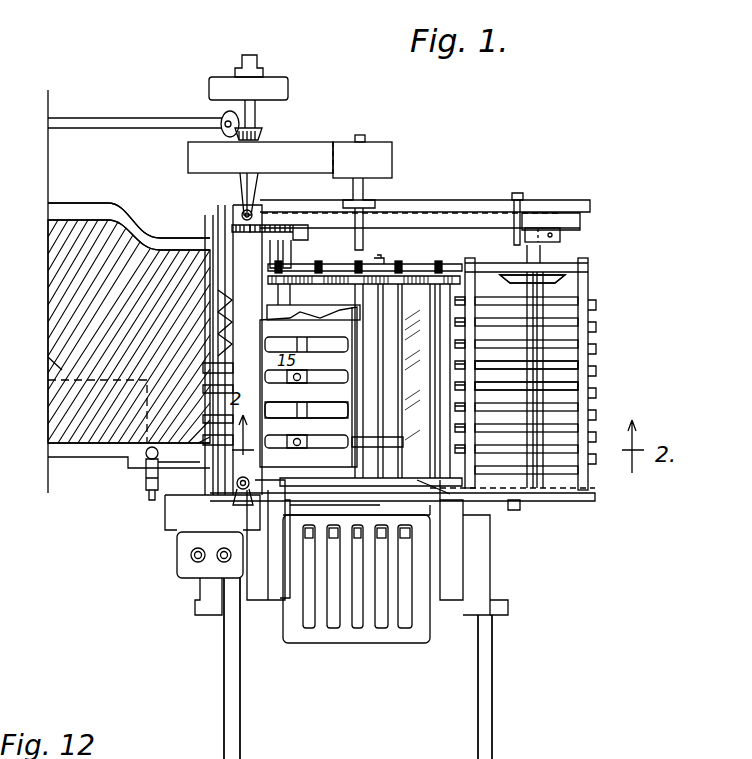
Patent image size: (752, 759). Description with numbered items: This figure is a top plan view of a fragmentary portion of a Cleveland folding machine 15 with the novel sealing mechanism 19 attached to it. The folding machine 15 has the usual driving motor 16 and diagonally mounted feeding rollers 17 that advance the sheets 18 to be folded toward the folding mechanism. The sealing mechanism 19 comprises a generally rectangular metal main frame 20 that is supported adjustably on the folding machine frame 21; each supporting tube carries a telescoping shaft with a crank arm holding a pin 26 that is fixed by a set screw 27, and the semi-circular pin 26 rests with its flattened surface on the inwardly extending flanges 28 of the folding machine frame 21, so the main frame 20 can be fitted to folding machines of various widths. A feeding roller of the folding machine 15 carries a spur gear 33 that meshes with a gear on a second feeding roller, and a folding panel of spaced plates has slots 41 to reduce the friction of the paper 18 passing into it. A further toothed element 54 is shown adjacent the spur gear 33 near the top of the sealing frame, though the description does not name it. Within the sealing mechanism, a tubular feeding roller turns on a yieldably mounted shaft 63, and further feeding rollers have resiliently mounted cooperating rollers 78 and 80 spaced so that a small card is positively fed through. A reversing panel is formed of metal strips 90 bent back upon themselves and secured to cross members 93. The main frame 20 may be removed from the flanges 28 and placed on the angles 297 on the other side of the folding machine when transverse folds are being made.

The folding machine 15 is at (95, 195).
The driving motor 16 is at (270, 84).
The feeding rollers 17 is at (70, 298).
The sheets 18 is at (48, 357).
The sealing mechanism 19 is at (636, 365).
The main frame 20 is at (393, 266).
The folding machine frame 21 is at (410, 200).
The pin 26 is at (552, 222).
The set screw 27 is at (560, 236).
The inwardly extending flanges 28 is at (478, 220).
The spur gear 33 is at (245, 225).
The slots 41 is at (328, 398).
The toothed rack 54 is at (278, 225).
The yieldably mounted shaft 63 is at (290, 295).
The cooperating roller 78 is at (353, 318).
The cooperating roller 80 is at (432, 320).
The metal strips 90 is at (565, 365).
The cross members 93 is at (473, 290).
The angles 297 is at (240, 725).